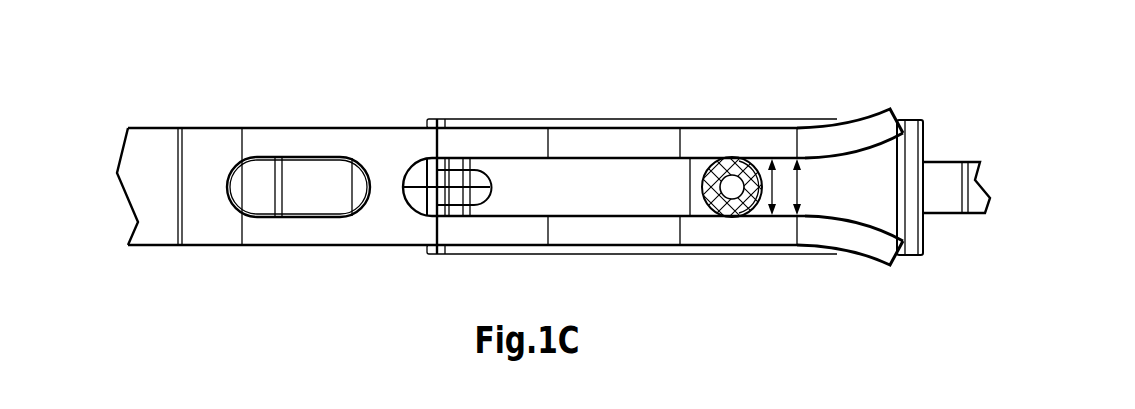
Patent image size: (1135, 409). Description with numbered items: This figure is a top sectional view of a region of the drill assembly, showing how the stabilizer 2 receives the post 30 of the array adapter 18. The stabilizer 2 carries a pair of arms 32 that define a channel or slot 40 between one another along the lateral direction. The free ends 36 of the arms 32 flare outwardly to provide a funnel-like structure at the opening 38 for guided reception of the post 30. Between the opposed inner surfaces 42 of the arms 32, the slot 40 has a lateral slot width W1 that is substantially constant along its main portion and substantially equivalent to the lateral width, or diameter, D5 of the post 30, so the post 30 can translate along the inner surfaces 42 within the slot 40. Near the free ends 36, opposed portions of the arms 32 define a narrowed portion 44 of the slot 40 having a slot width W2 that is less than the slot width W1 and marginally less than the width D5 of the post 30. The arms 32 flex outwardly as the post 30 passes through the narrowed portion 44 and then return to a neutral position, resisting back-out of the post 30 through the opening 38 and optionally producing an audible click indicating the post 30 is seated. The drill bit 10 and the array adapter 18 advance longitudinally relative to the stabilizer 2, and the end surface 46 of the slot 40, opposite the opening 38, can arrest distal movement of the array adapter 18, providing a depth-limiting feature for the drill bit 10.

The stabilizer 2 is at (227, 124).
The drill bit 10 is at (312, 188).
The array adapter 18 is at (781, 113).
The post 30 is at (718, 197).
The arms 32 is at (530, 150).
The free ends 36 is at (887, 122).
The opening 38 is at (892, 185).
The slot 40 is at (635, 197).
The inner surfaces 42 is at (562, 158).
The narrowed portion 44 is at (811, 148).
The end surface 46 is at (484, 188).
The lateral width of the post D5 is at (748, 175).
The slot width W1 is at (775, 188).
The slot width of the narrowed portion W2 is at (800, 188).